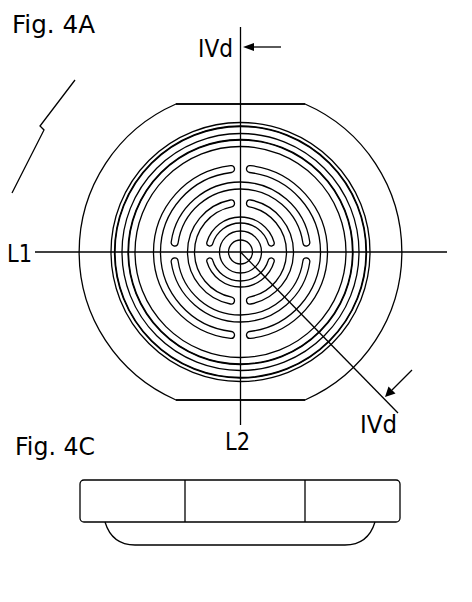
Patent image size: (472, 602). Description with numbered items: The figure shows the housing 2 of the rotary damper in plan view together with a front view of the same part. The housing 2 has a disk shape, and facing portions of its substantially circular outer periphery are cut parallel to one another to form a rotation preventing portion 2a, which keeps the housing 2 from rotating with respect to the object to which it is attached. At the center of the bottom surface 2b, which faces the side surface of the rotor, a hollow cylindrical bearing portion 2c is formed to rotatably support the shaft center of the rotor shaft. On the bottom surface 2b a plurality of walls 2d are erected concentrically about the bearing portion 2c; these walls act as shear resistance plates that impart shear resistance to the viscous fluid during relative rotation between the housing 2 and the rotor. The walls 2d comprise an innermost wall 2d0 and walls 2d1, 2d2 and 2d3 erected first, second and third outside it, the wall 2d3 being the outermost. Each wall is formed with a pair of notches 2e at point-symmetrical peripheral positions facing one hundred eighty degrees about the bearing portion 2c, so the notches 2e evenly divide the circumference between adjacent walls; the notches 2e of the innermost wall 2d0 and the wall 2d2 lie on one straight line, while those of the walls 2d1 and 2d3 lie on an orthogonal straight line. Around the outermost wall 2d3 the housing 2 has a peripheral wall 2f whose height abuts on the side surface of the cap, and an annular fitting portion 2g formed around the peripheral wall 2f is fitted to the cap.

In FIG. 4A, the housing 2 is at (366, 65).
In FIG. 4A, the rotation preventing portion 2a is at (232, 105).
In FIG. 4C, the rotation preventing portion 2a is at (236, 512).
In FIG. 4A, the bottom surface 2b is at (310, 290).
In FIG. 4A, the bearing portion 2c is at (251, 243).
In FIG. 4A, the walls 2d is at (40, 136).
In FIG. 4A, the innermost wall 2d0 is at (170, 118).
In FIG. 4A, the wall erected first outside the innermost wall 2d1 is at (157, 167).
In FIG. 4A, the wall erected second outside the innermost wall 2d2 is at (152, 208).
In FIG. 4A, the outermost wall 2d3 is at (138, 207).
In FIG. 4A, the notches 2e is at (252, 166).
In FIG. 4A, the peripheral wall 2f is at (132, 227).
In FIG. 4A, the fitting portion 2g is at (118, 267).